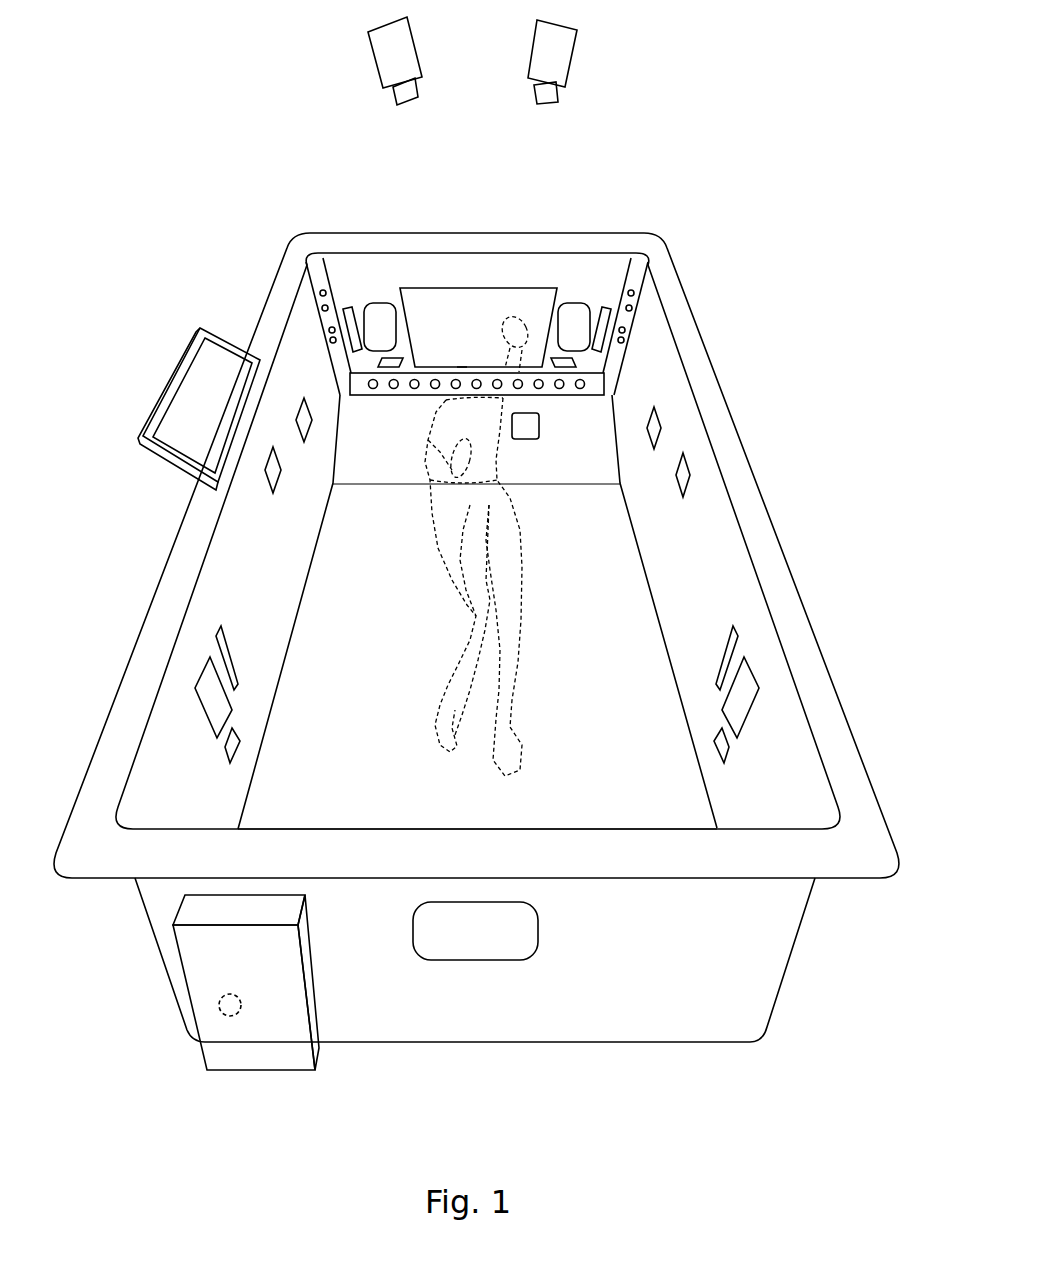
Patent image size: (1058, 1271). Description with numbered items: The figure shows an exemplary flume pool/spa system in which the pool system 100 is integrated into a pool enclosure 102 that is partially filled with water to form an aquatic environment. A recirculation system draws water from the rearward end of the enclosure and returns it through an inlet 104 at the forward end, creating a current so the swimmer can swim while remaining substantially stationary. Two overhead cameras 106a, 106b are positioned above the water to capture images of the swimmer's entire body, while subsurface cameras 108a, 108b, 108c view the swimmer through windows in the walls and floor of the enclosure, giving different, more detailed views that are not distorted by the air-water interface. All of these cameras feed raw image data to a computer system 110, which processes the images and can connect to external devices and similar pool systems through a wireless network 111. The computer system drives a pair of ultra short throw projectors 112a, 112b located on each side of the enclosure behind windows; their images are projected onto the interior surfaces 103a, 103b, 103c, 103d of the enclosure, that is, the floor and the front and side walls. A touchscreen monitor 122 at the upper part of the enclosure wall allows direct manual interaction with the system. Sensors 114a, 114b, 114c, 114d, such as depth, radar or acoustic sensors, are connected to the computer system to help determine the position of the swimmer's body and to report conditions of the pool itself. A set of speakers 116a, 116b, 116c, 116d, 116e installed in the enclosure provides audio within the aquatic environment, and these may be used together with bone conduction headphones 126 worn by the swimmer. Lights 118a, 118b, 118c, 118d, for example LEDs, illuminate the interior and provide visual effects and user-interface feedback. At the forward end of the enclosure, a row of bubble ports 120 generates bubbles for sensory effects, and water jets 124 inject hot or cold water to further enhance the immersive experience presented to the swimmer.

The pool system 100 is at (140, 113).
The pool enclosure 102 is at (252, 241).
The interior surface 103a is at (243, 550).
The interior surface 103b is at (360, 408).
The interior surface 103c is at (602, 475).
The interior surface 103d is at (627, 598).
The inlet 104 is at (473, 295).
The overhead camera 106a is at (373, 57).
The overhead camera 106b is at (573, 50).
The subsurface camera 108a is at (298, 403).
The subsurface camera 108b is at (525, 413).
The subsurface camera 108c is at (661, 428).
The computer system 110 is at (190, 952).
The wireless network 111 is at (218, 1005).
The projector 112a is at (265, 480).
The projector 112b is at (690, 475).
The sensor 114a is at (347, 308).
The sensor 114b is at (607, 307).
The sensor 114c is at (217, 630).
The sensor 114d is at (745, 632).
The speaker 116a is at (385, 303).
The speaker 116b is at (573, 303).
The speaker 116c is at (197, 686).
The speaker 116d is at (757, 690).
The speaker 116e is at (478, 960).
The light 118a is at (377, 363).
The light 118b is at (578, 362).
The light 118c is at (227, 747).
The light 118d is at (730, 752).
The bubble ports 120 is at (587, 383).
The touchscreen monitor 122 is at (150, 407).
The water jets 124 is at (628, 306).
The bone conduction headphones 126 is at (462, 367).